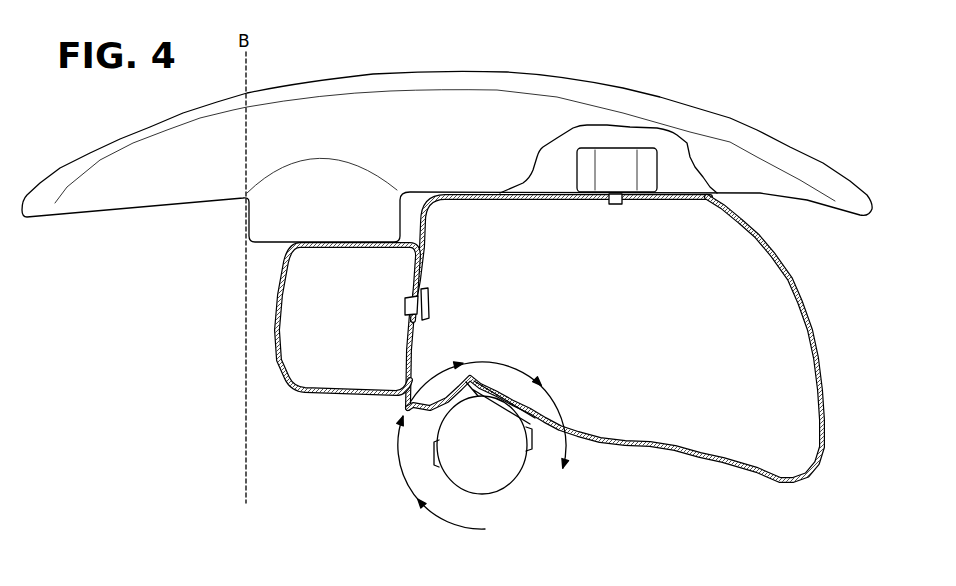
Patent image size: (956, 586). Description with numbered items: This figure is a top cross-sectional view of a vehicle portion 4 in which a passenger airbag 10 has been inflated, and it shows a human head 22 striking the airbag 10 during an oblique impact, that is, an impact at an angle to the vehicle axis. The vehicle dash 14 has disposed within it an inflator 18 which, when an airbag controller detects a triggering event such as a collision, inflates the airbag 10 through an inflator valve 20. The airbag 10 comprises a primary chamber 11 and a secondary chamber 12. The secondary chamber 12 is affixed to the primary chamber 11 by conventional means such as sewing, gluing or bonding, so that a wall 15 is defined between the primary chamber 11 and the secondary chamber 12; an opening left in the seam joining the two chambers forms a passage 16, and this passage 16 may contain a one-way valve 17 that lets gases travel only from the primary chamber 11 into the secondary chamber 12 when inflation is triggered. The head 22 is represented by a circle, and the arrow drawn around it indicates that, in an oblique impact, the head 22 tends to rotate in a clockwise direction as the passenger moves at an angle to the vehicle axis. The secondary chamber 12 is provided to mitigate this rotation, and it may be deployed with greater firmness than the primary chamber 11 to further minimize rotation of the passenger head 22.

The vehicle portion 4 is at (155, 350).
The passenger airbag 10 is at (753, 493).
The primary chamber 11 is at (718, 465).
The secondary chamber 12 is at (310, 388).
The vehicle dash 14 is at (145, 193).
The wall 15 is at (400, 353).
The passage 16 is at (402, 306).
The one-way valve 17 is at (410, 297).
The inflator 18 is at (620, 163).
The inflator valve 20 is at (618, 204).
The human head 22 is at (493, 454).